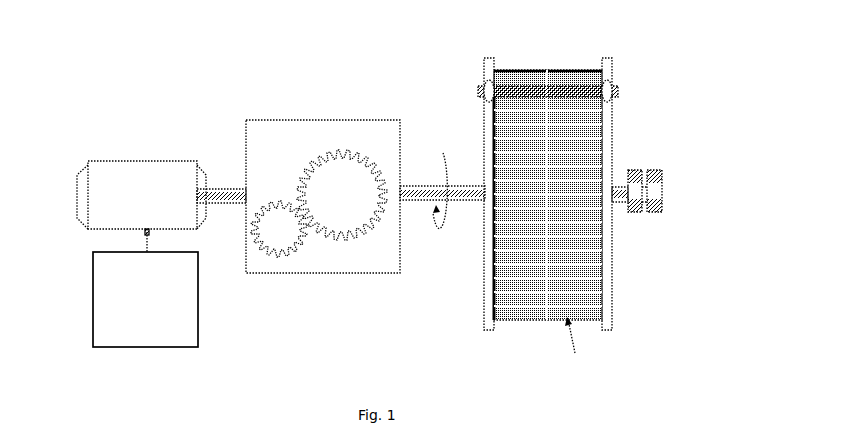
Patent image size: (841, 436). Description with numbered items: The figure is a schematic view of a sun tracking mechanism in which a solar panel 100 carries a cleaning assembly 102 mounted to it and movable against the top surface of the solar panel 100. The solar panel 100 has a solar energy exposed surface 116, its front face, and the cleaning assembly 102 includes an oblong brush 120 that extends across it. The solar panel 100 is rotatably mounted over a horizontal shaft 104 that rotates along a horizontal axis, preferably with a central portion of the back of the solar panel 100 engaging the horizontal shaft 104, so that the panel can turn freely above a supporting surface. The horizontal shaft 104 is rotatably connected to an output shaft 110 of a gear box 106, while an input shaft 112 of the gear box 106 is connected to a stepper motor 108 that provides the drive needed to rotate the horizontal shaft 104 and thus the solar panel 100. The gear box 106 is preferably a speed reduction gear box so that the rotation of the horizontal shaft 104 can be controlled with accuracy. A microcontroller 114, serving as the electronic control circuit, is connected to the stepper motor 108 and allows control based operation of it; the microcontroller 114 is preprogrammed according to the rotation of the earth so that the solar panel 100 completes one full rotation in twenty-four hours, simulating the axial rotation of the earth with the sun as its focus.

The solar panel 100 is at (621, 129).
The cleaning assembly 102 is at (525, 75).
The horizontal shaft 104 is at (475, 202).
The gear box 106 is at (263, 133).
The stepper motor 108 is at (112, 178).
The output shaft 110 is at (419, 193).
The input shaft 112 is at (223, 205).
The microcontroller 114 is at (123, 317).
The solar energy exposed surface 116 is at (573, 270).
The oblong brush 120 is at (548, 80).